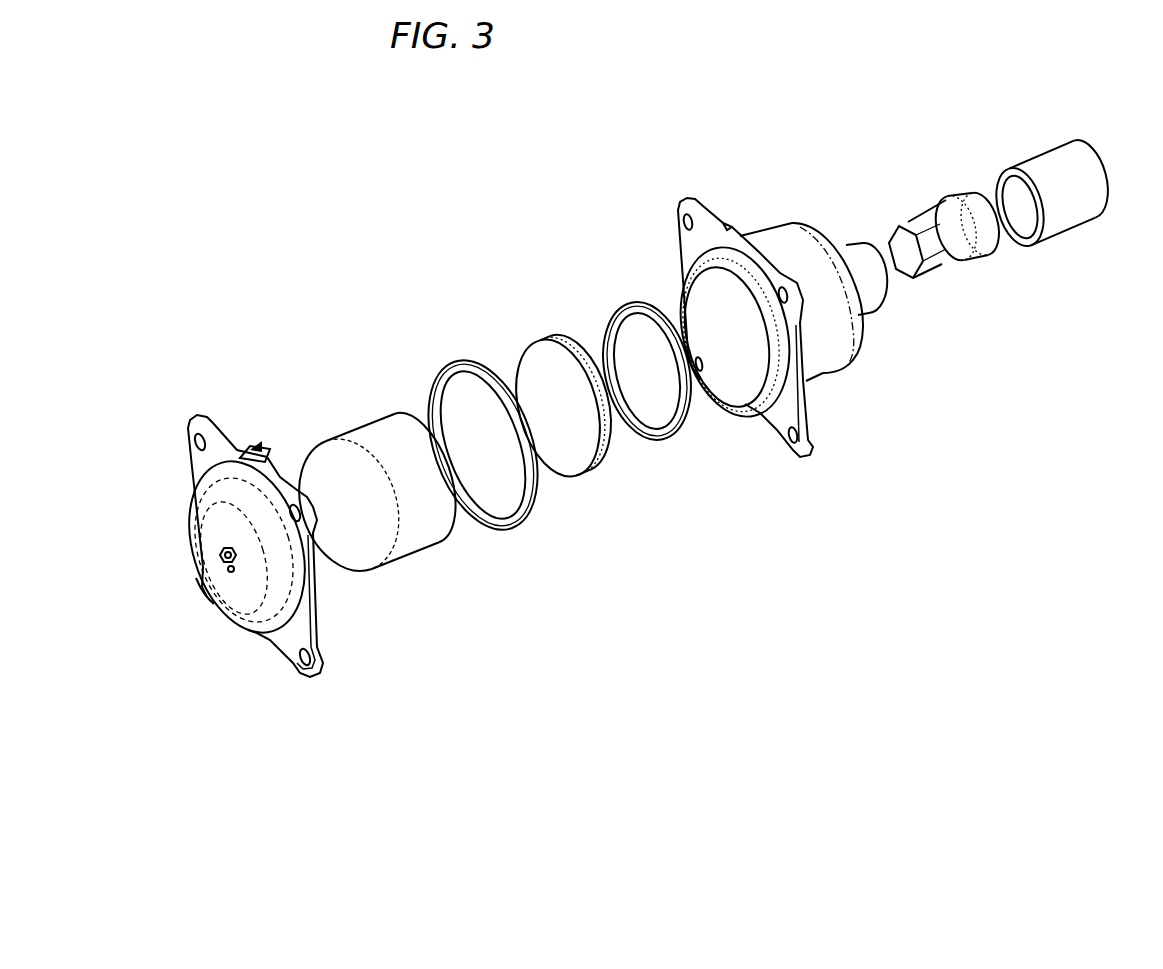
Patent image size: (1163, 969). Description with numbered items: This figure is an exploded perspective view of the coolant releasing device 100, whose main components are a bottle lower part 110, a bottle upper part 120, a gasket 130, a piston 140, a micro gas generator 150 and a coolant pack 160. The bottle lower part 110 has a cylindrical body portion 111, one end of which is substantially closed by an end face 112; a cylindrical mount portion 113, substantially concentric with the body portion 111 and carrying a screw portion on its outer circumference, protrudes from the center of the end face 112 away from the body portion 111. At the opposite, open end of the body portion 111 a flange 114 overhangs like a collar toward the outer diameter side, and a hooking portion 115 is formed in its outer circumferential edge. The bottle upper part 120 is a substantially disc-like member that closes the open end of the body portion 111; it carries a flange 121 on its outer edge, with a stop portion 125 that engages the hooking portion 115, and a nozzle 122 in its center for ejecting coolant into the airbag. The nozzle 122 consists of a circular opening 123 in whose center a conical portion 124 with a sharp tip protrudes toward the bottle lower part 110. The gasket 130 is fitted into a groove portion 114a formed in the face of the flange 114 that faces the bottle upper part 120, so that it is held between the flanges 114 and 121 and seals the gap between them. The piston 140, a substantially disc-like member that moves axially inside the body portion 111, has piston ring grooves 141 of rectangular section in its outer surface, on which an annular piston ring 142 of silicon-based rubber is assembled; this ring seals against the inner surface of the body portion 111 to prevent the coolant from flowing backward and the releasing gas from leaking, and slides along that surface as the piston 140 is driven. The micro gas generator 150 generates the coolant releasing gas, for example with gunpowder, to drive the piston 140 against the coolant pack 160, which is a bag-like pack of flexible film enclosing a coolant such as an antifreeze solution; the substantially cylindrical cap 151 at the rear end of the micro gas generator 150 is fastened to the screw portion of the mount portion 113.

The coolant releasing device 100 is at (314, 207).
The bottle lower part 110 is at (762, 311).
The body portion 111 is at (823, 373).
The end face 112 is at (862, 340).
The mount portion 113 is at (855, 243).
The flange 114 is at (808, 452).
The groove portion 114a is at (712, 252).
The hooking portion 115 is at (727, 227).
The bottle upper part 120 is at (298, 590).
The flange 121 is at (200, 585).
The nozzle 122 is at (222, 581).
The circular opening 123 is at (218, 544).
The conical portion 124 is at (232, 571).
The stop portion 125 is at (253, 443).
The gasket 130 is at (526, 521).
The piston 140 is at (628, 463).
The piston ring grooves 141 is at (610, 453).
The piston ring 142 is at (680, 430).
The micro gas generator 150 is at (957, 257).
The cap 151 is at (1067, 227).
The coolant pack 160 is at (425, 543).